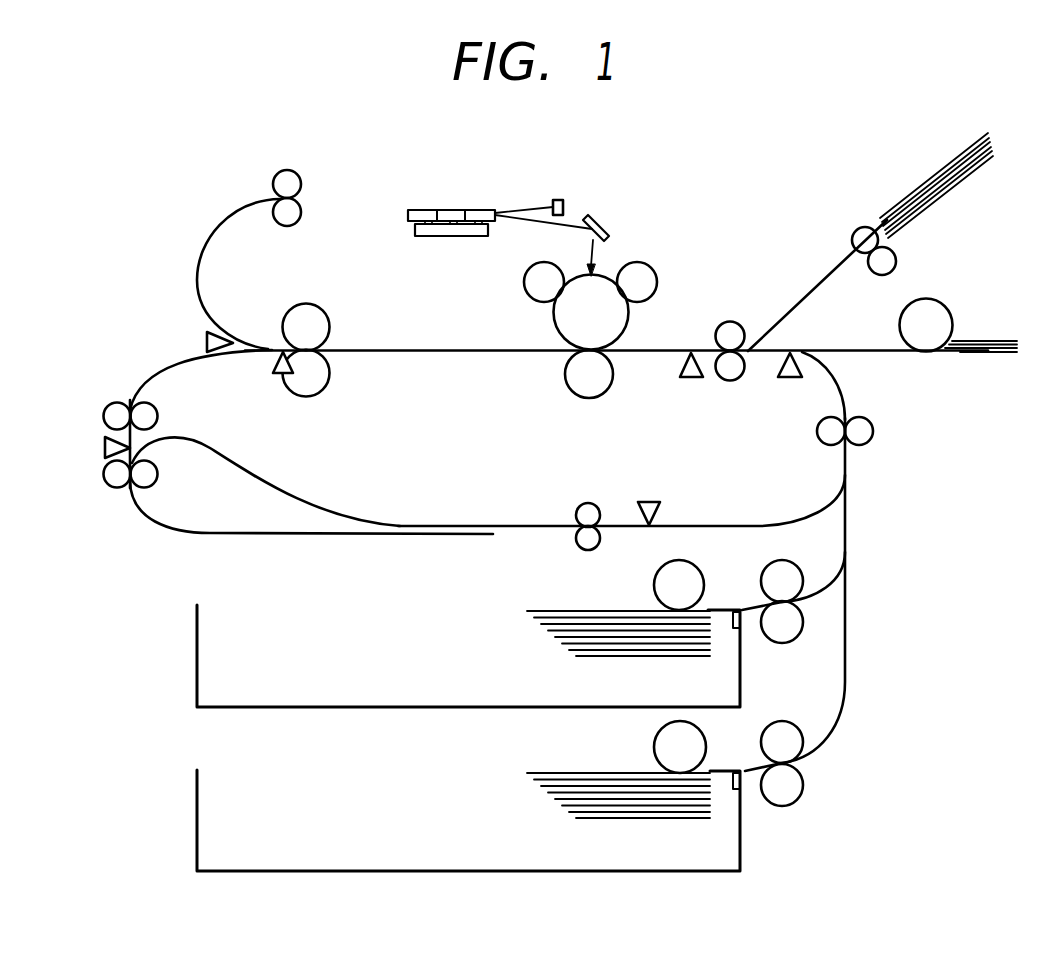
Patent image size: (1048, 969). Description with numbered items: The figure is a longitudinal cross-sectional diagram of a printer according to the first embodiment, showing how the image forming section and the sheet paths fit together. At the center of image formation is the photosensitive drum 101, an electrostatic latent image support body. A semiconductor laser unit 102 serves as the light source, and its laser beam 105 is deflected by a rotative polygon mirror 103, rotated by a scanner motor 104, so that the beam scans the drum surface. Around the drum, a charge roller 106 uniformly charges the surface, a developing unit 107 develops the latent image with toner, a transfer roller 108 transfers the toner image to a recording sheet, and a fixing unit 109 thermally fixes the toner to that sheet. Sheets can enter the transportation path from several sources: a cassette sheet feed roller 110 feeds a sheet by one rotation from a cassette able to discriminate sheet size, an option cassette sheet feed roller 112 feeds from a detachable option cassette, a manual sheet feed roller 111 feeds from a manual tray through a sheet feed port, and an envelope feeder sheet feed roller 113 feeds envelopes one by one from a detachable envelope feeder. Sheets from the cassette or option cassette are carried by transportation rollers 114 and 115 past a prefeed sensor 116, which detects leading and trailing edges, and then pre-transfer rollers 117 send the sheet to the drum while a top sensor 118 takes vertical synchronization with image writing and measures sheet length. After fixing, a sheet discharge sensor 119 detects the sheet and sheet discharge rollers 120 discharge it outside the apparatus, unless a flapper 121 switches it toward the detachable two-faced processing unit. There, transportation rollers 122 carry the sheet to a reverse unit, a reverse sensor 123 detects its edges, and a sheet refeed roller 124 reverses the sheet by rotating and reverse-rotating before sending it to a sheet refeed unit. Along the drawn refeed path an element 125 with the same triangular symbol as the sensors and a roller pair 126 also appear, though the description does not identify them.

The photosensitive drum 101 is at (554, 318).
The semiconductor laser unit 102 is at (560, 200).
The rotative polygon mirror 103 is at (455, 210).
The scanner motor 104 is at (430, 237).
The laser beam 105 is at (612, 238).
The charge roller 106 is at (524, 282).
The developing unit 107 is at (657, 282).
The transfer roller 108 is at (600, 397).
The fixing unit 109 is at (310, 303).
The cassette sheet feed roller 110 is at (654, 582).
The manual sheet feed roller 111 is at (940, 300).
The option cassette sheet feed roller 112 is at (654, 745).
The envelope feeder sheet feed roller 113 is at (852, 240).
The transportation rollers 114 is at (790, 562).
The transportation rollers 115 is at (873, 431).
The prefeed sensor 116 is at (790, 378).
The pre-transfer rollers 117 is at (737, 322).
The top sensor 118 is at (691, 378).
The sheet discharge sensor 119 is at (274, 365).
The sheet discharge rollers 120 is at (303, 180).
The flapper 121 is at (207, 340).
The transportation rollers 122 is at (118, 402).
The reverse sensor 123 is at (105, 443).
The sheet refeed roller 124 is at (117, 489).
The duplex sensor 125 is at (649, 501).
The duplex conveying roller pair 126 is at (580, 505).